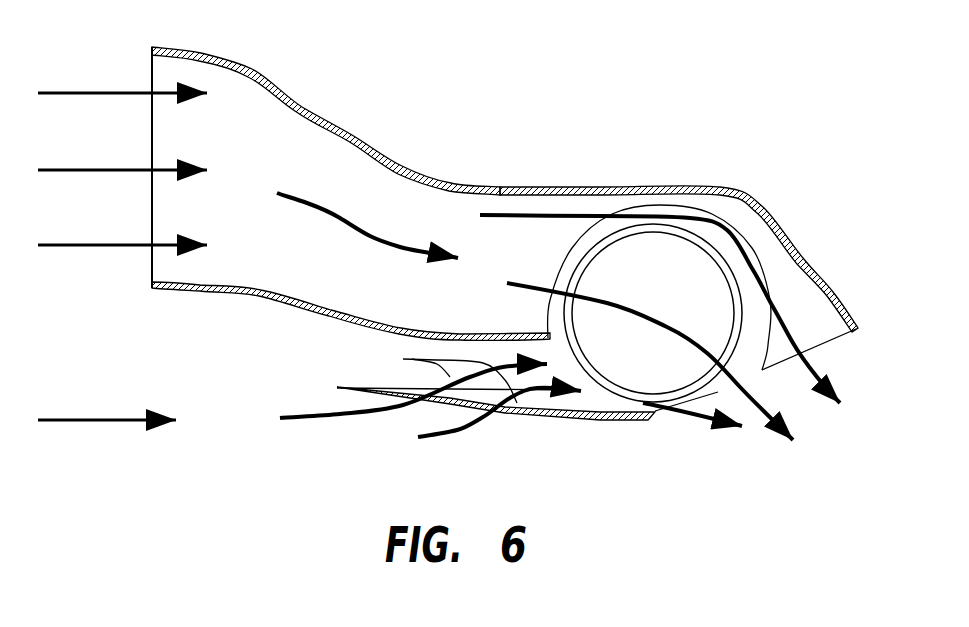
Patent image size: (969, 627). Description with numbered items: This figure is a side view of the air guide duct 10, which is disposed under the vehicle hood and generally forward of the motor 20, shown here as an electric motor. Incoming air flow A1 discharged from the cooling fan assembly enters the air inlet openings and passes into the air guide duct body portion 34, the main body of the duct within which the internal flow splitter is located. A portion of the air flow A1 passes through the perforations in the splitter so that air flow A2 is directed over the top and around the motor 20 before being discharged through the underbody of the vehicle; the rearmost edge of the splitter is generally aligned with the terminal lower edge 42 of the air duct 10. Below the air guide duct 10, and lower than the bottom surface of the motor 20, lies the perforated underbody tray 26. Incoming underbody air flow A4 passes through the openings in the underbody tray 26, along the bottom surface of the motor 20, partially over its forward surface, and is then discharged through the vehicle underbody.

The air guide duct 10 is at (505, 193).
The air guide duct body portion 34 is at (561, 184).
The motor 20 is at (668, 294).
The terminal lower edge 42 is at (563, 337).
The underbody tray 26 is at (585, 421).
The air flow A1 is at (92, 143).
The air flow A2 is at (388, 232).
The underbody air flow A4 is at (92, 408).